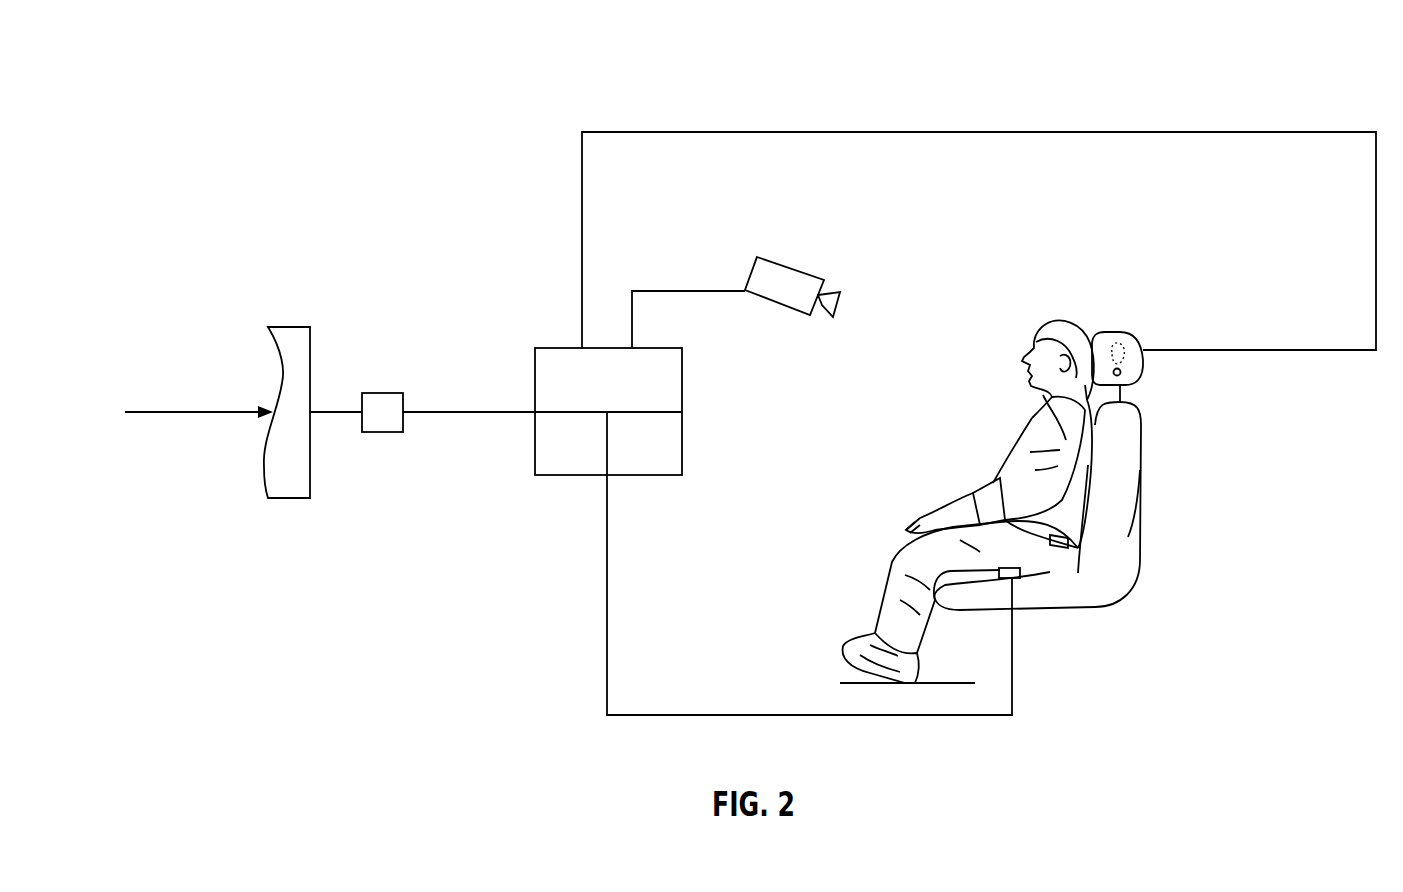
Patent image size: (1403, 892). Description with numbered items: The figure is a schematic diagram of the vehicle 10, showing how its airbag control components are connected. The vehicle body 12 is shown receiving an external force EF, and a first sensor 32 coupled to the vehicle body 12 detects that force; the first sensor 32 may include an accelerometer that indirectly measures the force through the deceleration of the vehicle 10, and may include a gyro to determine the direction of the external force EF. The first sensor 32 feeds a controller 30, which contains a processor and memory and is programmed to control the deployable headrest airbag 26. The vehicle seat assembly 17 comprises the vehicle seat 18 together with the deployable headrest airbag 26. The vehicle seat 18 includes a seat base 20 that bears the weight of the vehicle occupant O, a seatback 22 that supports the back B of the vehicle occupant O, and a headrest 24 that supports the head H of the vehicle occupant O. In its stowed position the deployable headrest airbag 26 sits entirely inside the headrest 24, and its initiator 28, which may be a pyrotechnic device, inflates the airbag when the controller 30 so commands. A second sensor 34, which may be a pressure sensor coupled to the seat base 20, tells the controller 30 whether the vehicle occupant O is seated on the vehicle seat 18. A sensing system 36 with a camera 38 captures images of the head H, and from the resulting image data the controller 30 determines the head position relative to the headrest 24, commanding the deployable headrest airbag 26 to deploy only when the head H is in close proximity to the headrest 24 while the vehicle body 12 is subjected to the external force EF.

The vehicle 10 is at (716, 84).
The vehicle body 12 is at (288, 327).
The vehicle seat assembly 17 is at (1064, 470).
The vehicle seat 18 is at (1128, 537).
The seat base 20 is at (987, 597).
The seatback 22 is at (1118, 502).
The headrest 24 is at (1112, 332).
The deployable headrest airbag 26 is at (1125, 347).
The initiator 28 is at (1121, 372).
The controller 30 is at (682, 380).
The first sensor 32 is at (381, 393).
The second sensor 34 is at (1017, 580).
The sensing system 36 is at (782, 242).
The camera 38 is at (840, 293).
The external force EF is at (197, 411).
The head H is at (1060, 323).
The back B is at (1124, 470).
The vehicle occupant O is at (1009, 470).